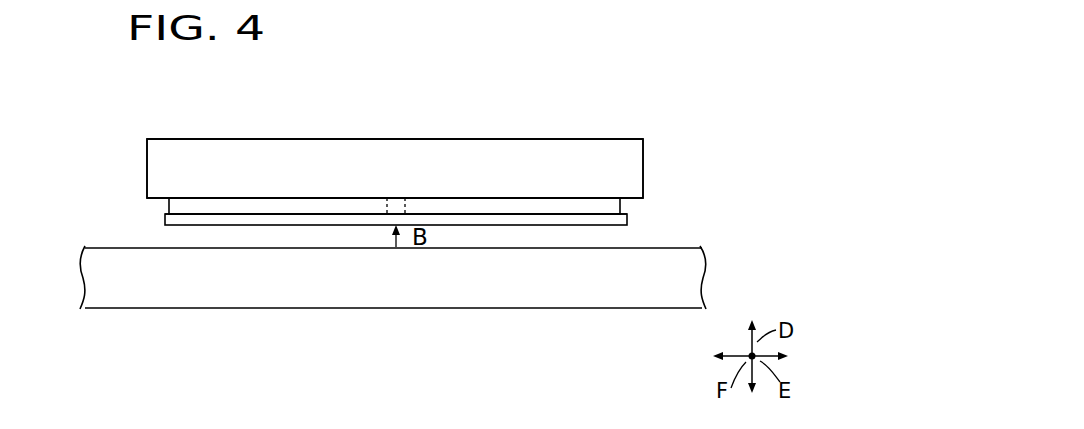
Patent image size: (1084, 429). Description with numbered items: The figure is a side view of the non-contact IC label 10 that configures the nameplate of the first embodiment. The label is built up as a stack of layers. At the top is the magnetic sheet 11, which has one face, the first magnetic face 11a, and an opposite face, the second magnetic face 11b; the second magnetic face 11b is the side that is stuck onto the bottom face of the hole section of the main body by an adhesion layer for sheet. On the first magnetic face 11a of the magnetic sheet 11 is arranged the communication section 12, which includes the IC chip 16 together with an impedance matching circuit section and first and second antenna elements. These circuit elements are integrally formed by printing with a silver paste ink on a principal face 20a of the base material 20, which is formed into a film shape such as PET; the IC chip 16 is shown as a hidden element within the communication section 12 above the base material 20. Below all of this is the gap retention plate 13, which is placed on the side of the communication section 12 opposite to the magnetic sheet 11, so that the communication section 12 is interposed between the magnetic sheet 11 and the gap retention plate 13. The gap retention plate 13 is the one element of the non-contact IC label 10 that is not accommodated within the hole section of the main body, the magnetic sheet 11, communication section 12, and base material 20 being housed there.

The non-contact IC label 10 is at (193, 134).
The magnetic sheet 11 is at (643, 165).
The one face (first magnetic face) of the magnetic sheet 11a is at (160, 199).
The other face (second magnetic face) of the magnetic sheet 11b is at (147, 139).
The communication section 12 is at (630, 206).
The IC chip 16 is at (386, 200).
The base material 20 is at (627, 220).
The principal face of the base material 20a is at (527, 214).
The gap retention plate (gap retention section) 13 is at (680, 286).